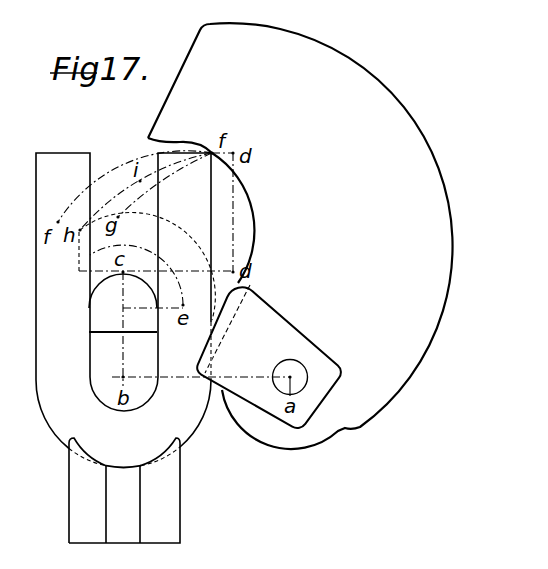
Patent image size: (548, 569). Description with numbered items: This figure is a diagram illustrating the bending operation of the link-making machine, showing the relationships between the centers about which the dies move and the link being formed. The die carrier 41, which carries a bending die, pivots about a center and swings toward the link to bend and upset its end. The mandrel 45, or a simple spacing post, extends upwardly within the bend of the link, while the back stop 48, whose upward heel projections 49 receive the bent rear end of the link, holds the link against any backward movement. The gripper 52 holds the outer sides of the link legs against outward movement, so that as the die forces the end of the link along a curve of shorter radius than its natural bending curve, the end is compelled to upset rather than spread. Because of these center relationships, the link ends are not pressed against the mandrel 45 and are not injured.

The die carrier 41 is at (300, 236).
The mandrel 45 is at (98, 316).
The back stop 48 is at (123, 504).
The upward projections 49 is at (172, 496).
The gripper 52 is at (269, 357).